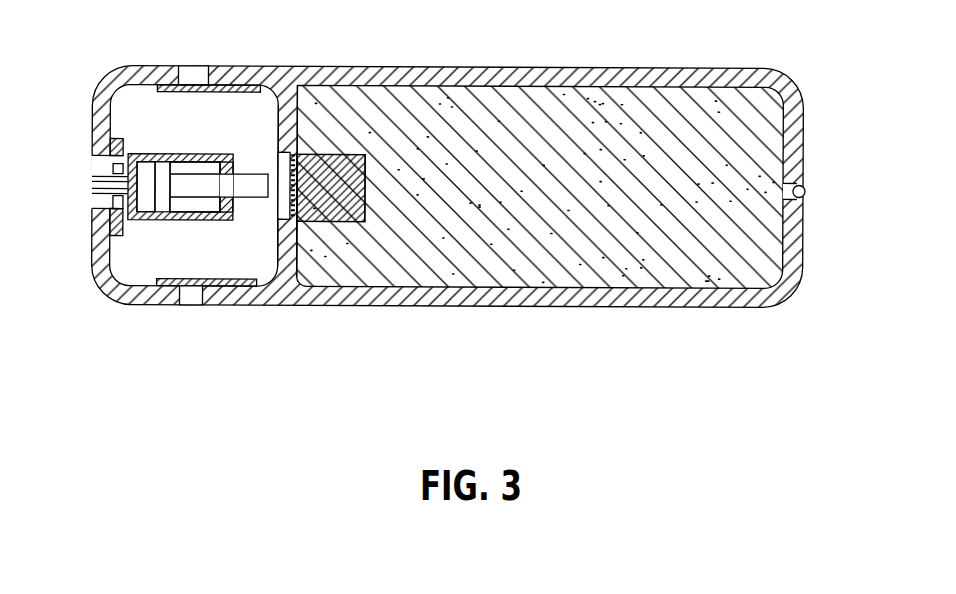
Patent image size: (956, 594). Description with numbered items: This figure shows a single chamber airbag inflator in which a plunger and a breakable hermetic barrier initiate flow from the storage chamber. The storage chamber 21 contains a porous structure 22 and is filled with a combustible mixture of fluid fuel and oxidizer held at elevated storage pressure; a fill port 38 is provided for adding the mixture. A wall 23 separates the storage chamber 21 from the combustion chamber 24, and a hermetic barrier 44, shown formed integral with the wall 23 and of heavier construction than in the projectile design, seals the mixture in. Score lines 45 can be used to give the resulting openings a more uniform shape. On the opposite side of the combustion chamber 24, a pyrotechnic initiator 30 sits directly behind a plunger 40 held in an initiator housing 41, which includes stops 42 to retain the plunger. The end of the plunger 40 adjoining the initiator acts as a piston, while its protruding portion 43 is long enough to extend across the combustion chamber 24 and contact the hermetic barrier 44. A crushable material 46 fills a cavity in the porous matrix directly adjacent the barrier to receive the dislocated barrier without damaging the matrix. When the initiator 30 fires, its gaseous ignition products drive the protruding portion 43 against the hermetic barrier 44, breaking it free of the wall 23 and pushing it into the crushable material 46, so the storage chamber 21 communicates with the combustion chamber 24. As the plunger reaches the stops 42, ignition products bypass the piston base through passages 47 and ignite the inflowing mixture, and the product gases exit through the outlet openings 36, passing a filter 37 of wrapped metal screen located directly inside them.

The storage chamber 21 is at (598, 112).
The porous structure 22 is at (707, 105).
The wall 23 is at (299, 118).
The combustion chamber 24 is at (123, 108).
The pyrotechnic initiator 30 is at (147, 193).
The outlet openings 36 is at (199, 78).
The filter 37 is at (241, 87).
The fill port 38 is at (806, 190).
The plunger 40 is at (165, 173).
The initiator housing 41 is at (160, 222).
The stops 42 is at (232, 214).
The protruding portion 43 is at (190, 222).
The hermetic barrier 44 is at (300, 200).
The score lines 45 is at (300, 155).
The crushable material 46 is at (333, 178).
The passages 47 is at (205, 155).